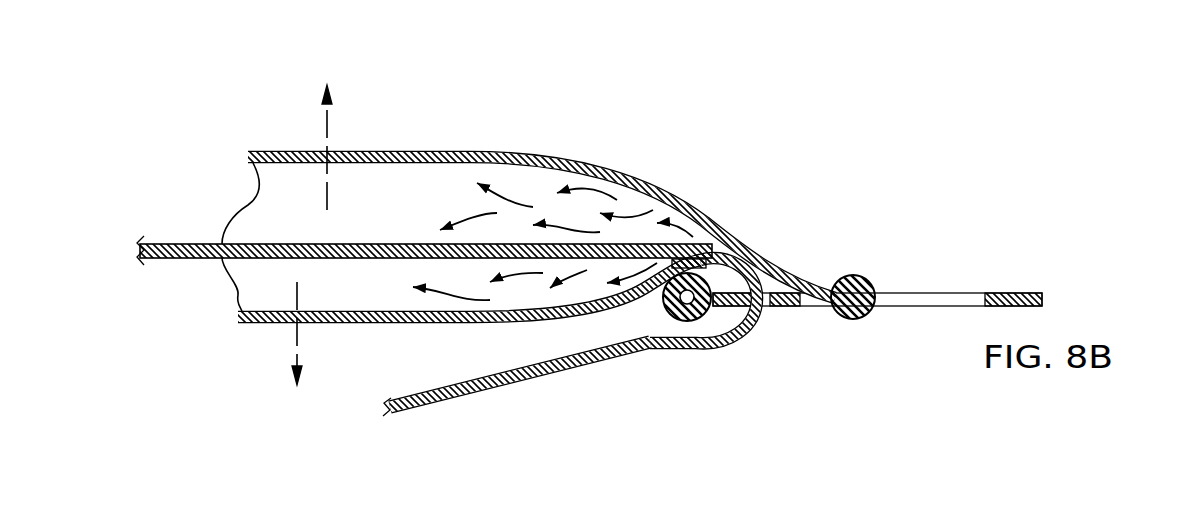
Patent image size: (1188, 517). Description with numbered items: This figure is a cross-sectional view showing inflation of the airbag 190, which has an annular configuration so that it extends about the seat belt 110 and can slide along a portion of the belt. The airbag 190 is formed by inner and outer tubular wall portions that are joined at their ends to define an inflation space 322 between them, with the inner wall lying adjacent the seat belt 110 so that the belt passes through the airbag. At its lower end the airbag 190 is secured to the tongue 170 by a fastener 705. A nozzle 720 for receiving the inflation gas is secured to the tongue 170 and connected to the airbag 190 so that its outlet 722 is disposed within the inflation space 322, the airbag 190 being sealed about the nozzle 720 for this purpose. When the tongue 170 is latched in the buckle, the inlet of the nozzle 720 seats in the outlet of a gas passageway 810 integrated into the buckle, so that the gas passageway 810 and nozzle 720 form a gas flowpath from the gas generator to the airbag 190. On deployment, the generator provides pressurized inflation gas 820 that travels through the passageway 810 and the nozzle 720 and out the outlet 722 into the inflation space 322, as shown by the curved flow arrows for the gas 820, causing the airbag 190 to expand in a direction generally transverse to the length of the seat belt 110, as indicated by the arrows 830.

The seat belt 110 is at (170, 243).
The tongue 170 is at (953, 293).
The airbag 190 is at (387, 150).
The inflation space 322 is at (282, 175).
The fastener 705 is at (848, 275).
The nozzle 720 is at (673, 343).
The outlet 722 is at (697, 258).
The gas passageway 810 is at (702, 322).
The inflation gas 820 is at (510, 190).
The arrows 830 is at (320, 112).